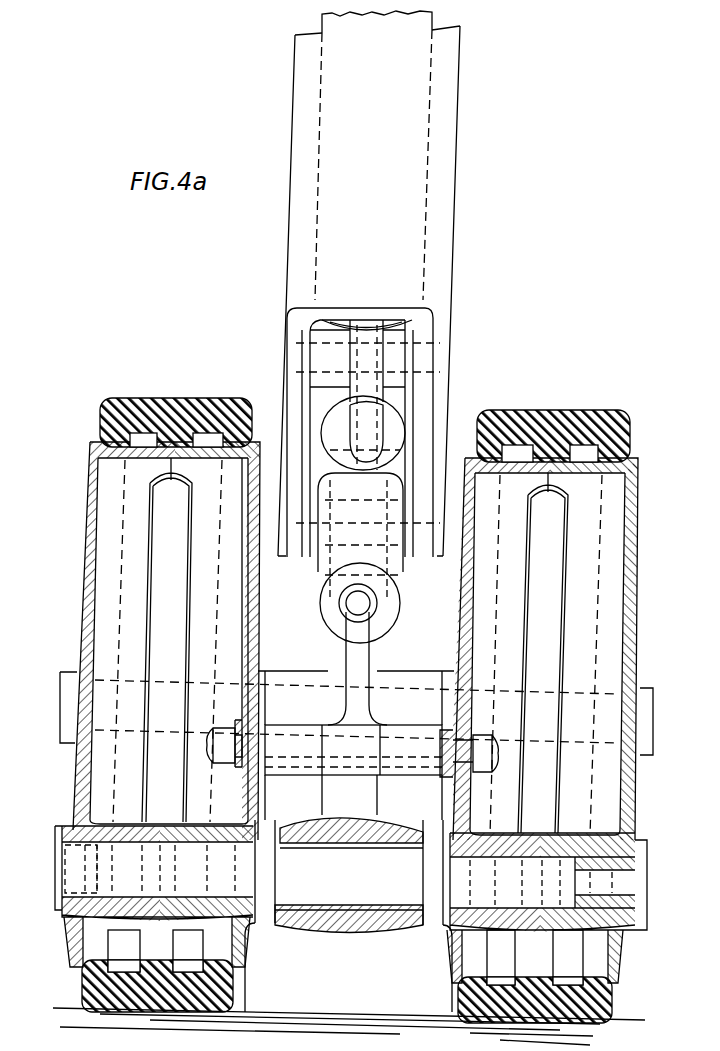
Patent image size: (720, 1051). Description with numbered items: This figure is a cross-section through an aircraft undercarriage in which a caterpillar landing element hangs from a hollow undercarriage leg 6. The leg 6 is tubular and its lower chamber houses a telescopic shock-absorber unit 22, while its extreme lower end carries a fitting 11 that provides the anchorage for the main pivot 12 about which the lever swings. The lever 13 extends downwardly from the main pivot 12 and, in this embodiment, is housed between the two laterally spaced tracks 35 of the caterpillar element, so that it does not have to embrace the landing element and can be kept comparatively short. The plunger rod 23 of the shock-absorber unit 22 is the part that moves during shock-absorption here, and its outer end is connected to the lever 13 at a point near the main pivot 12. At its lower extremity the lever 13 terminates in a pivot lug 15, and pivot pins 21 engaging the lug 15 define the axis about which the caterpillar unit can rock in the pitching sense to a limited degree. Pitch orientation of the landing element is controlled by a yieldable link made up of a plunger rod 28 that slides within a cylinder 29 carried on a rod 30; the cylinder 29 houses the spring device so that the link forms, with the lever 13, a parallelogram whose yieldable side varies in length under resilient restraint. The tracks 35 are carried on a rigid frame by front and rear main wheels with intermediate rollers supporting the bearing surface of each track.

The undercarriage leg 6 is at (443, 190).
The telescopic shock-absorber unit 22 is at (432, 21).
The fitting 11 is at (294, 548).
The main pivot 12 is at (446, 556).
The plunger rod 23 is at (362, 392).
The plunger rod of yieldable link 28 is at (390, 412).
The cylinder 29 is at (394, 606).
The rod 30 is at (360, 659).
The lever arm 13 is at (365, 795).
The pivot pins 21 is at (349, 875).
The pivot lug 15 is at (322, 930).
The tracks 35 is at (193, 403).